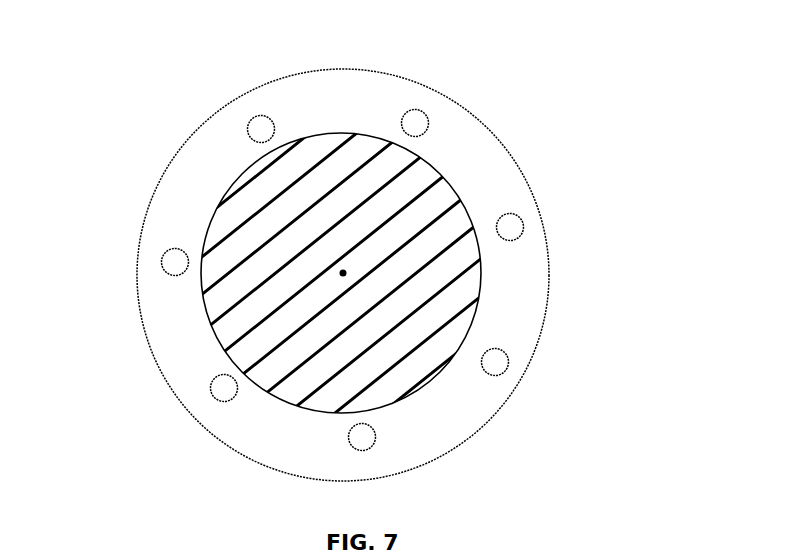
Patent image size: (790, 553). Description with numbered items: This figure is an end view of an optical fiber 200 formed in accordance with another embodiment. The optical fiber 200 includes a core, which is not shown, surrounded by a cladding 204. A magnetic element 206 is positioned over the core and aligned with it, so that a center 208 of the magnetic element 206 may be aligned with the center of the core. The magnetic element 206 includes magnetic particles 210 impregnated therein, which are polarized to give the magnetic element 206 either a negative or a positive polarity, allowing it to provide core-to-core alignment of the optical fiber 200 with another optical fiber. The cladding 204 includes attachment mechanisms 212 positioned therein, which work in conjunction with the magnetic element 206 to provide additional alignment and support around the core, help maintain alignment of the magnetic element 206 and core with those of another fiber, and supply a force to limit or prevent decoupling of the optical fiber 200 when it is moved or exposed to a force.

The optical fiber 200 is at (508, 88).
The cladding 204 is at (498, 148).
The magnetic element 206 is at (488, 265).
The center 208 is at (343, 273).
The magnetic particles 210 is at (285, 150).
The attachment mechanisms 212 is at (513, 226).